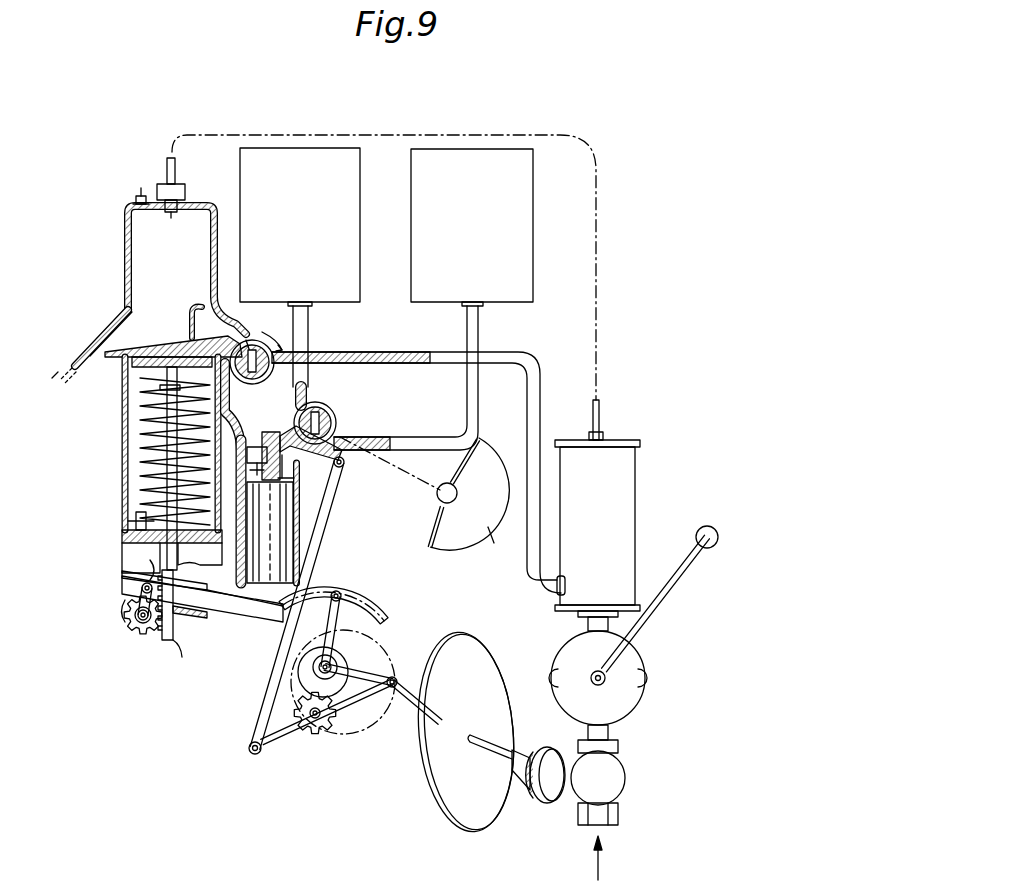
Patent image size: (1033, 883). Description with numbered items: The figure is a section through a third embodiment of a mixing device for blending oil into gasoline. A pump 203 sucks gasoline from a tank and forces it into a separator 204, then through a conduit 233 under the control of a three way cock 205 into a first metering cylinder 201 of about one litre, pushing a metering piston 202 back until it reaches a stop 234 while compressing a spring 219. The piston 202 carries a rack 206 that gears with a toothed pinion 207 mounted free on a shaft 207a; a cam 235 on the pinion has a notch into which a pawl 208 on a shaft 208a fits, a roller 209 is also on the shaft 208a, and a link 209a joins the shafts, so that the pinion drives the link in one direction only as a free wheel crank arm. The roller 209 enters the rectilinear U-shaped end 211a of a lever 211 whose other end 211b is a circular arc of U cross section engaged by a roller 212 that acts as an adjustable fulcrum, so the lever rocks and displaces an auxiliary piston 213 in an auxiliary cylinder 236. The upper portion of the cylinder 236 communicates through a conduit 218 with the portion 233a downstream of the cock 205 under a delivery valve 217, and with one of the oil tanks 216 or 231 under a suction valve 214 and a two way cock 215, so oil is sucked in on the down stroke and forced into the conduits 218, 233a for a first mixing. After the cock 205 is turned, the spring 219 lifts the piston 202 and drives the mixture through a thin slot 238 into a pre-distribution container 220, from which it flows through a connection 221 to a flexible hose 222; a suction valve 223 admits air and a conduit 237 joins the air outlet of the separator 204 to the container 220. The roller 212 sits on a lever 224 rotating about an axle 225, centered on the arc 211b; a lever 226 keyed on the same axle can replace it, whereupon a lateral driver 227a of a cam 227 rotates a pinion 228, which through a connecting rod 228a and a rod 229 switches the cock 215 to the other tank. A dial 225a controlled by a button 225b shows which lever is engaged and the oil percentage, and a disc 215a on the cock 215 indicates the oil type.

The first metering cylinder 201 is at (121, 453).
The metering piston 202 is at (150, 352).
The pump 203 is at (646, 693).
The separator 204 is at (628, 520).
The three way cock 205 is at (258, 340).
The rack 206 is at (180, 655).
The toothed pinion 207 is at (136, 625).
The shaft 207a is at (143, 628).
The pawl 208 is at (140, 596).
The shaft 208a is at (150, 578).
The roller 209 is at (140, 589).
The link 209a is at (182, 616).
The lever 211 is at (225, 626).
The rectilinear U-shaped end 211a is at (200, 590).
The circular arc end 211b is at (386, 614).
The roller 212 is at (342, 594).
The auxiliary piston 213 is at (288, 565).
The suction valve 214 is at (296, 478).
The two way cock 215 is at (336, 428).
The disc 215a is at (478, 546).
The oil tank 216 is at (475, 152).
The delivery valve 217 is at (300, 452).
The conduit 218 is at (244, 432).
The spring 219 is at (138, 493).
The pre-distribution container 220 is at (124, 219).
The connection 221 is at (100, 336).
The flexible hose 222 is at (68, 390).
The suction valve 223 is at (140, 200).
The lever 224 is at (360, 636).
The axle 225 is at (352, 716).
The dial 225a is at (466, 834).
The button 225b is at (545, 803).
The lever 226 is at (396, 678).
The cam 227 is at (312, 648).
The lateral driver 227a is at (290, 690).
The pinion 228 is at (317, 738).
The connecting rod 228a is at (272, 751).
The rod 229 is at (290, 642).
The oil tank 231 is at (299, 150).
The conduit 233 is at (529, 352).
The conduit portion 233a is at (248, 340).
The stop 234 is at (134, 523).
The cam 235 is at (124, 621).
The auxiliary cylinder 236 is at (300, 516).
The conduit 237 is at (170, 162).
The thin slot 238 is at (190, 310).